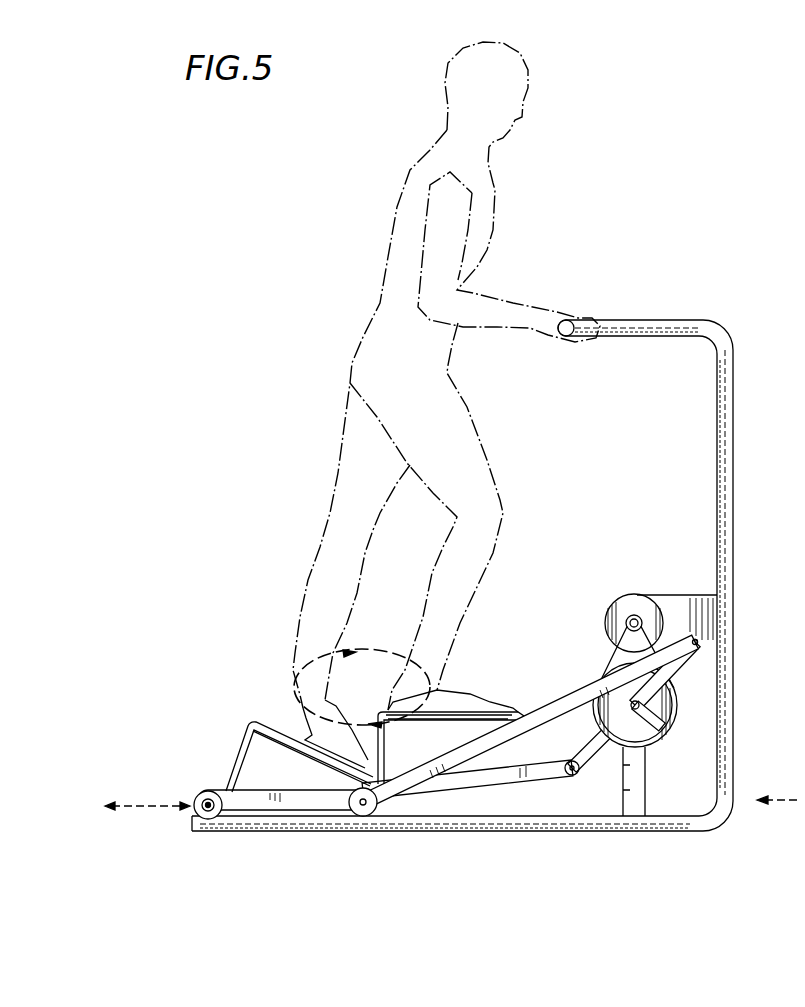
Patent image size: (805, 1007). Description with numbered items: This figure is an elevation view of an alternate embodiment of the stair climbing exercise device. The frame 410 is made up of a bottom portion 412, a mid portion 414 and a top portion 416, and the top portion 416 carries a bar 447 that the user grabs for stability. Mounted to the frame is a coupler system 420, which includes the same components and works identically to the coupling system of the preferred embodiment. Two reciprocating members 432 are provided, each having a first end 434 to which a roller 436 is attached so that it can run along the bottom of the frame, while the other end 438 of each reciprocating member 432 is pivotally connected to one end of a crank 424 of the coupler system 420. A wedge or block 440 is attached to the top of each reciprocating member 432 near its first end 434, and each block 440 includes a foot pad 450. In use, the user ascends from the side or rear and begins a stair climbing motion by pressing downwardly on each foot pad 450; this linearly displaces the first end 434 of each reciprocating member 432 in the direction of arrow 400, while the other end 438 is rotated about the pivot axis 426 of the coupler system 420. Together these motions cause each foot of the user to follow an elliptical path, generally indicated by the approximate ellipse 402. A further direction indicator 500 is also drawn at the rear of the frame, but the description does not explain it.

The arrow 400 is at (150, 805).
The approximate ellipse 402 is at (313, 667).
The frame 410 is at (733, 480).
The bottom portion 412 is at (585, 833).
The mid portion 414 is at (727, 418).
The top portion 416 is at (662, 323).
The coupler system 420 is at (677, 723).
The crank 424 is at (673, 678).
The pivot axis 426 is at (658, 730).
The reciprocating member 432 is at (307, 795).
The first end 434 is at (233, 803).
The roller 436 is at (205, 790).
The other end 438 is at (689, 625).
The wedge or block 440 is at (262, 752).
The bar 447 is at (563, 320).
The foot pad 450 is at (493, 703).
The direction of movement 500 is at (790, 803).